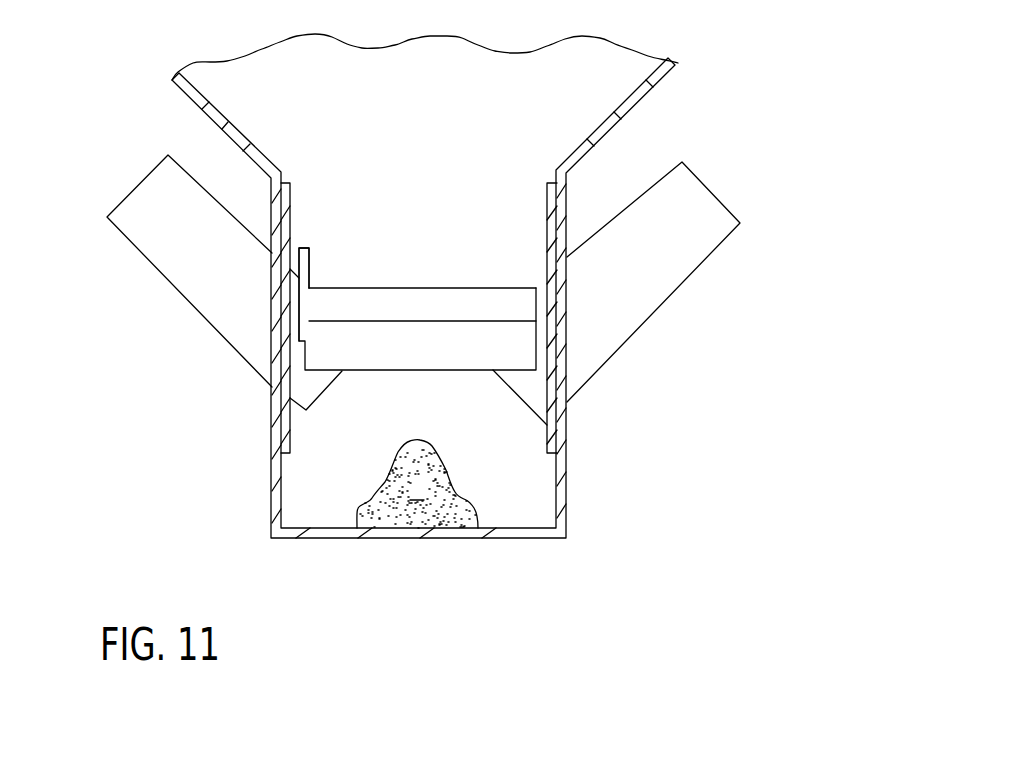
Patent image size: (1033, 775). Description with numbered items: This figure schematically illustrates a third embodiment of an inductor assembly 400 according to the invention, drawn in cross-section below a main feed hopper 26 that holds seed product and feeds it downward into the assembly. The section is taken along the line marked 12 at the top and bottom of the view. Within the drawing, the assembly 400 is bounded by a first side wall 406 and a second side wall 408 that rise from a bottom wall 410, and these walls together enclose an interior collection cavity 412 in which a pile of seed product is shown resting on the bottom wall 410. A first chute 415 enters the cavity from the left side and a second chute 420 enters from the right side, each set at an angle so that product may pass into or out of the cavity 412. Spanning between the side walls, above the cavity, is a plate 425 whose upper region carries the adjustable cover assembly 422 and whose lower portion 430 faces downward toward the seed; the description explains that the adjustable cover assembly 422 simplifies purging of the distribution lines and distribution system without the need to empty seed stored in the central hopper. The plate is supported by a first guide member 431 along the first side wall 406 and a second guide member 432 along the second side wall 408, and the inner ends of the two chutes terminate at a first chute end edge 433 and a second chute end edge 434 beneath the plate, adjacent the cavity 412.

The section line 12- 12 is at (312, 160).
The main feed hopper 26 is at (655, 88).
The sample handling assembly 400 is at (653, 155).
The first side wall 406 is at (270, 490).
The second side wall 408 is at (567, 494).
The bottom wall 410 is at (418, 538).
The collection cavity 412 is at (493, 468).
The first chute 415 is at (188, 302).
The second chute 420 is at (637, 332).
The adjustable cover assembly 422 is at (420, 288).
The divider plate 425 is at (371, 303).
The lower portion of divider plate 430 is at (398, 356).
The first guide member 431 is at (303, 272).
The second guide member 432 is at (546, 284).
The first chute end edge 433 is at (328, 392).
The second chute end edge 434 is at (510, 395).